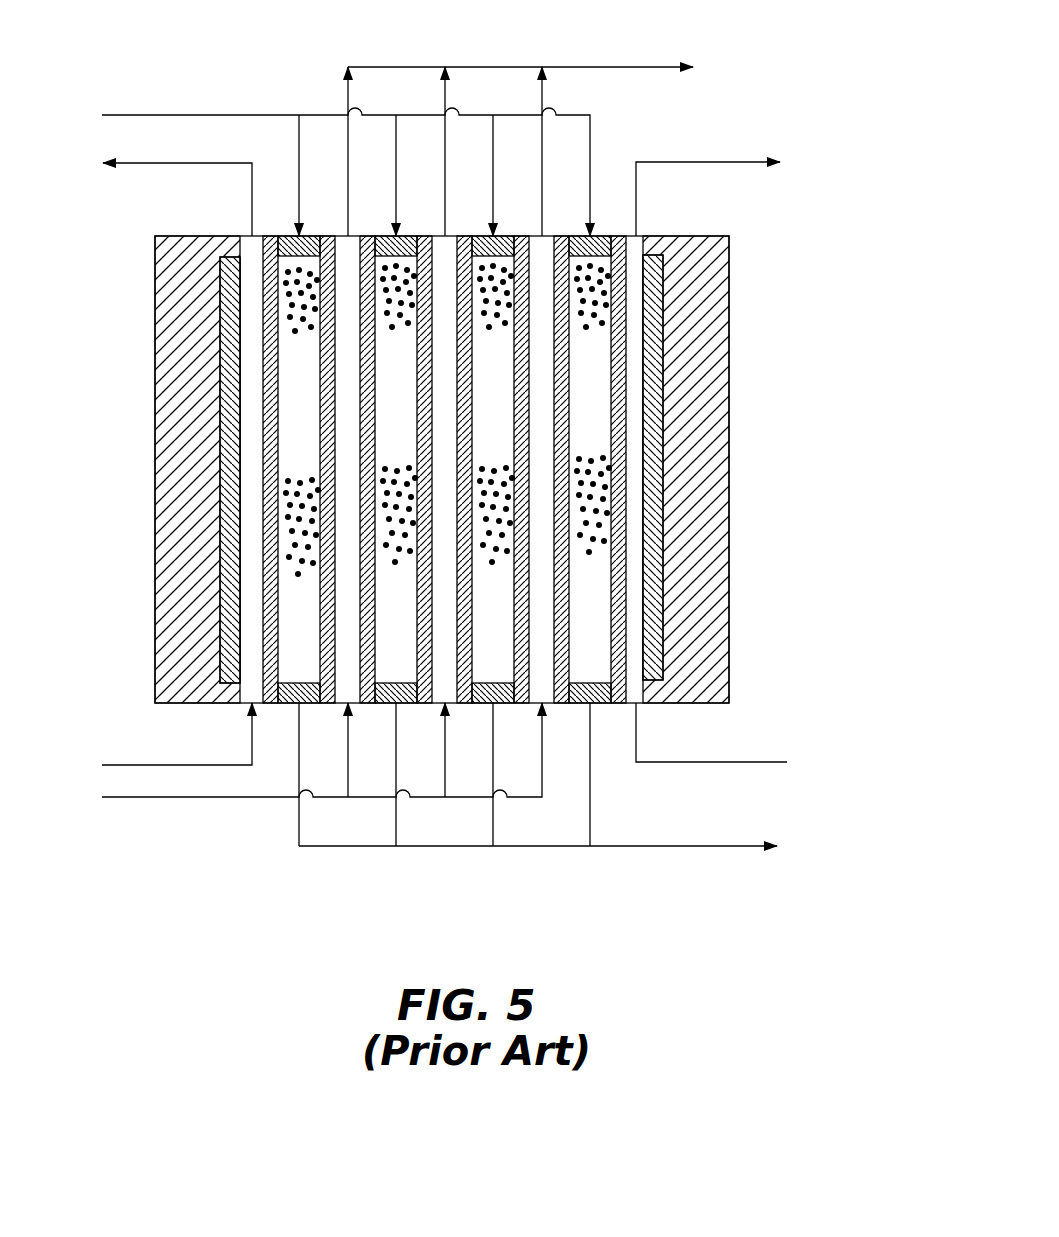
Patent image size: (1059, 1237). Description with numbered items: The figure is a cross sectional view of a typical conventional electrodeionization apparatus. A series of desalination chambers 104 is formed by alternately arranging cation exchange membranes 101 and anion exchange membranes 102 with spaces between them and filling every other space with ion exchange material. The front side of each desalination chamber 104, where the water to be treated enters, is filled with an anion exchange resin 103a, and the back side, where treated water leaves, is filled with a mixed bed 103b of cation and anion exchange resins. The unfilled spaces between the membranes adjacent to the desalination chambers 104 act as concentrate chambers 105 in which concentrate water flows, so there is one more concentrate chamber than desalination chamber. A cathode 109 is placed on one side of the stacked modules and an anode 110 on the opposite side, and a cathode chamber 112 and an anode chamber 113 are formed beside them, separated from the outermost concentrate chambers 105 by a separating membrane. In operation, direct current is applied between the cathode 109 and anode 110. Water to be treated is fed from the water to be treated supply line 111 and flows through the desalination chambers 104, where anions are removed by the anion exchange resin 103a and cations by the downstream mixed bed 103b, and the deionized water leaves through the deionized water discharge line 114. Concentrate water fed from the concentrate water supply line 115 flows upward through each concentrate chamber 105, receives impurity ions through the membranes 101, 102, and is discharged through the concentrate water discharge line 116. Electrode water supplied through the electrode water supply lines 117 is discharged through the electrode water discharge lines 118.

The cation exchange membrane 101 is at (270, 340).
The anion exchange membrane 102 is at (620, 395).
The anion exchange resin 103a is at (290, 305).
The mixed bed of cation and anion exchange resins 103b is at (290, 483).
The desalination chamber 104 is at (298, 385).
The concentrate chamber 105 is at (348, 430).
The cathode 109 is at (233, 565).
The anode 110 is at (655, 597).
The water to be treated supply line 111 is at (180, 115).
The cathode chamber 112 is at (252, 612).
The anode chamber 113 is at (660, 668).
The deionized water discharge line 114 is at (653, 846).
The concentrate water supply line 115 is at (160, 797).
The concentrate water discharge line 116 is at (612, 67).
The electrode water supply line 117 is at (157, 765).
The electrode water discharge line 118 is at (187, 163).